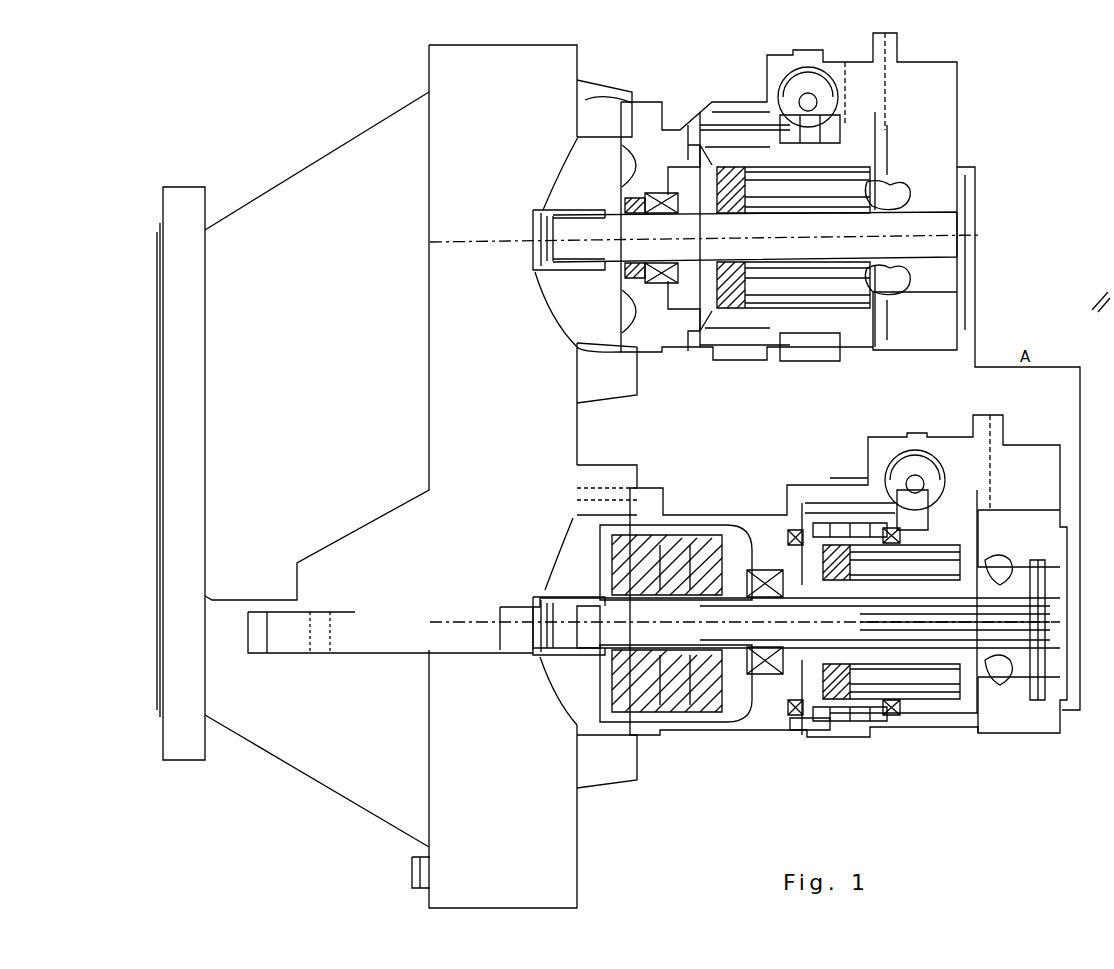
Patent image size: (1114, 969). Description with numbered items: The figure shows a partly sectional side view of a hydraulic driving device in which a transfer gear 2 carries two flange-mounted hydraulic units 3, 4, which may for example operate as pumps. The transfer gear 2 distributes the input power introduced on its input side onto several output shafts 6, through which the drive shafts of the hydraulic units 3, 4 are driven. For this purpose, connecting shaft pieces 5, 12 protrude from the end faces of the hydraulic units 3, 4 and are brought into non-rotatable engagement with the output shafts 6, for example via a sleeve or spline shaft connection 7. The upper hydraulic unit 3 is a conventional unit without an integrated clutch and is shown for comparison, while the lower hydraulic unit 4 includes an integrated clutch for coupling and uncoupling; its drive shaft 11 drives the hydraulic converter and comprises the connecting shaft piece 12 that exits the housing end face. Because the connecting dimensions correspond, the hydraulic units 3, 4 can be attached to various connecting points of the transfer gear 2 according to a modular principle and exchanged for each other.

The transfer gear 2 is at (313, 765).
The hydraulic unit 3 is at (990, 96).
The hydraulic unit 4 is at (1020, 768).
The connecting shaft piece 5 is at (562, 208).
The output shaft 6 is at (538, 212).
The sleeve or spline shaft connection 7 is at (580, 652).
The drive shaft 11 is at (812, 706).
The connecting shaft piece 12 is at (570, 600).